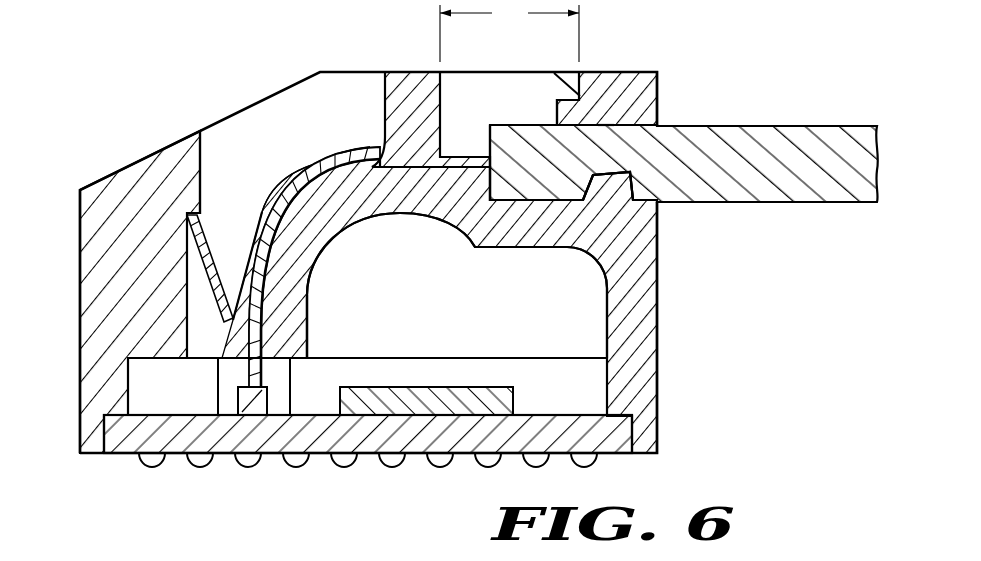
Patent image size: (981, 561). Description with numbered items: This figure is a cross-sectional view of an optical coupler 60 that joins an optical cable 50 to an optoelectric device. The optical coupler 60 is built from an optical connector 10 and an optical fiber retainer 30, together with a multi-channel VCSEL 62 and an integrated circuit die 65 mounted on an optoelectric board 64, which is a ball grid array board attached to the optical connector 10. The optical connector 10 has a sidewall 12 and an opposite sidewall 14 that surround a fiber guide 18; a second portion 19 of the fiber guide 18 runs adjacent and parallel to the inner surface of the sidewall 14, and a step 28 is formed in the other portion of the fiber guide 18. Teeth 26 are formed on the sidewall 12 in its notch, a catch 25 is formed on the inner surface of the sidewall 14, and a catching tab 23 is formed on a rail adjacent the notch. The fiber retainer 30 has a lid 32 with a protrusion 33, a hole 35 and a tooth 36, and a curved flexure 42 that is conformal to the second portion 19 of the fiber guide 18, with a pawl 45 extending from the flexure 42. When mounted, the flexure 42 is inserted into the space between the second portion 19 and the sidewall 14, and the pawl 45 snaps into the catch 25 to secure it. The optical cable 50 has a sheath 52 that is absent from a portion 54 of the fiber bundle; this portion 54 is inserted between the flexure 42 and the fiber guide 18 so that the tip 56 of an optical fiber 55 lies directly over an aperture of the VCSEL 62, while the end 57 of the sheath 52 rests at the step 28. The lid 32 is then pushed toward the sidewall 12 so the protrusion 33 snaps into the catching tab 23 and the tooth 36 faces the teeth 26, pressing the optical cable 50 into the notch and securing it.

The optical connector 10 is at (722, 306).
The sidewall 12 is at (656, 356).
The sidewall 14 is at (78, 357).
The fiber guide 18 is at (357, 226).
The second portion of fiber guide 19 is at (309, 320).
The catching tab 23 is at (557, 74).
The catch 25 is at (203, 200).
The teeth 26 is at (633, 180).
The step 28 is at (493, 184).
The optical fiber retainer 30 is at (406, 80).
The lid 32 is at (615, 78).
The protrusion 33 is at (560, 114).
The hole 35 is at (509, 31).
The tooth 36 is at (604, 126).
The flexure 42 is at (326, 158).
The pawl 45 is at (208, 250).
The optical cable 50 is at (765, 127).
The sheath 52 is at (805, 203).
The portion of bundle of optical fibers 54 is at (350, 148).
The optical fiber 55 is at (286, 180).
The tip 56 is at (266, 382).
The end of sheath 57 is at (486, 108).
The optical coupler 60 is at (829, 523).
The multi-channel VCSEL 62 is at (238, 396).
The optoelectric board 64 is at (323, 454).
The integrated circuit die 65 is at (514, 392).